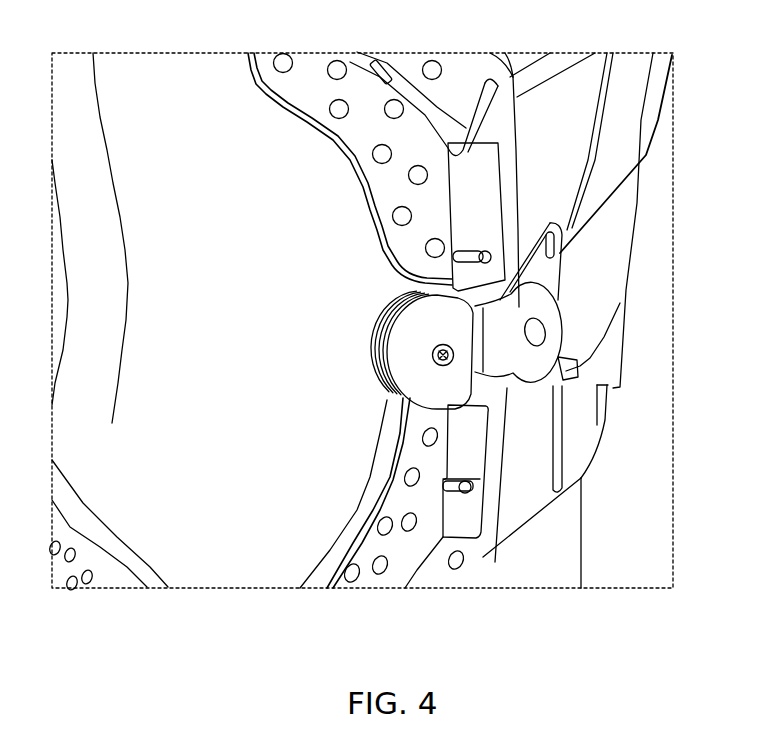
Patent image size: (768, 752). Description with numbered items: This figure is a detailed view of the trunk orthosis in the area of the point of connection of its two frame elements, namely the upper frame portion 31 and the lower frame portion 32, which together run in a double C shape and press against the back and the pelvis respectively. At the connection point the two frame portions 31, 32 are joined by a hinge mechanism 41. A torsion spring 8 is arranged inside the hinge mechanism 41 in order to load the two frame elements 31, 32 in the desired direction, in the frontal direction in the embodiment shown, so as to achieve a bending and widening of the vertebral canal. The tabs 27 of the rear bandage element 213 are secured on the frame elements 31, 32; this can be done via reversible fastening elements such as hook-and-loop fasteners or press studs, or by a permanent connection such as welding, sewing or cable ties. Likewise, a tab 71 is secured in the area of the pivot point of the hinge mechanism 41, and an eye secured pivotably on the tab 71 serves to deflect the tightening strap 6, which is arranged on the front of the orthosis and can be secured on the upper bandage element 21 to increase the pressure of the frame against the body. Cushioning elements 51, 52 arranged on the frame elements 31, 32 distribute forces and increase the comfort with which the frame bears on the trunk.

The tightening strap 6 is at (628, 215).
The torsion spring 8 is at (390, 325).
The bandage element 21 is at (565, 97).
The tabs 27 is at (463, 199).
The upper frame portion 31 is at (415, 87).
The lower frame portion 32 is at (428, 565).
The hinge mechanism 41 is at (432, 358).
The cushioning element 51 is at (293, 90).
The cushioning element 52 is at (88, 567).
The tab 71 is at (580, 373).
The rear bandage element 213 is at (528, 507).